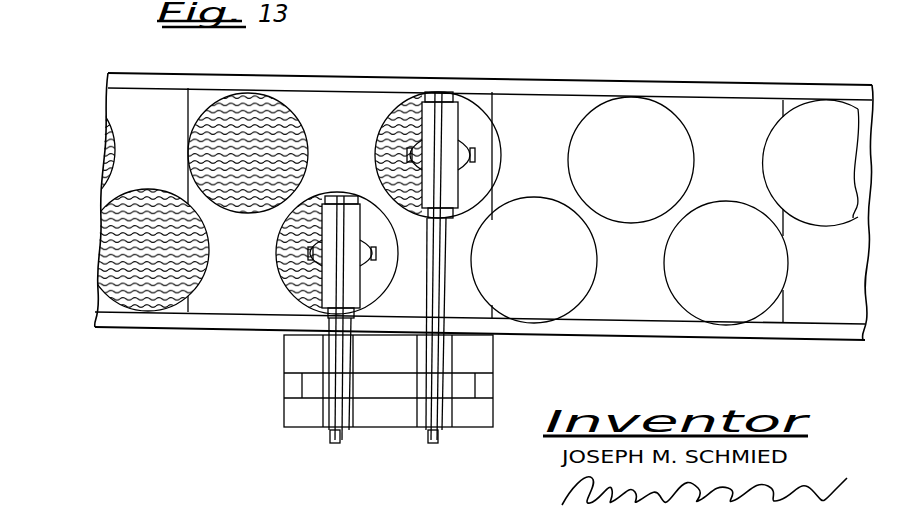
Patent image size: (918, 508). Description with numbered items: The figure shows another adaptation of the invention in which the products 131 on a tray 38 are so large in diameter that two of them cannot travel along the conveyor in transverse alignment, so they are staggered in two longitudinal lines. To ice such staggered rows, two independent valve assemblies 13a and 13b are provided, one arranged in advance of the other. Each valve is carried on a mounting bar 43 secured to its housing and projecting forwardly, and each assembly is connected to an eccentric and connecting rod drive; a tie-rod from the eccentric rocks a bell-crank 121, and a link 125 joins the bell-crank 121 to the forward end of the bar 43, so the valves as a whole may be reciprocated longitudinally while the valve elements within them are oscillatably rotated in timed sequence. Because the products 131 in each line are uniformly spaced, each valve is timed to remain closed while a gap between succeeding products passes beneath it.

The tray 38 is at (183, 78).
The product 131 is at (574, 133).
The valve assembly 13a is at (452, 112).
The valve assembly 13b is at (333, 207).
The mounting bar 43 is at (434, 293).
The link 125 is at (423, 387).
The bell-crank 121 is at (437, 413).